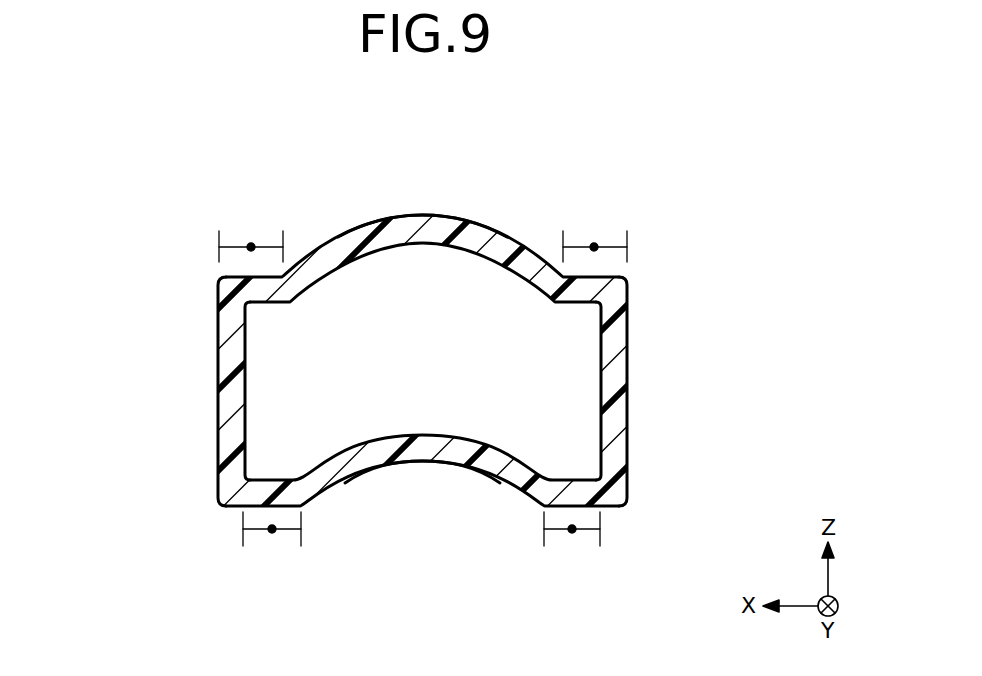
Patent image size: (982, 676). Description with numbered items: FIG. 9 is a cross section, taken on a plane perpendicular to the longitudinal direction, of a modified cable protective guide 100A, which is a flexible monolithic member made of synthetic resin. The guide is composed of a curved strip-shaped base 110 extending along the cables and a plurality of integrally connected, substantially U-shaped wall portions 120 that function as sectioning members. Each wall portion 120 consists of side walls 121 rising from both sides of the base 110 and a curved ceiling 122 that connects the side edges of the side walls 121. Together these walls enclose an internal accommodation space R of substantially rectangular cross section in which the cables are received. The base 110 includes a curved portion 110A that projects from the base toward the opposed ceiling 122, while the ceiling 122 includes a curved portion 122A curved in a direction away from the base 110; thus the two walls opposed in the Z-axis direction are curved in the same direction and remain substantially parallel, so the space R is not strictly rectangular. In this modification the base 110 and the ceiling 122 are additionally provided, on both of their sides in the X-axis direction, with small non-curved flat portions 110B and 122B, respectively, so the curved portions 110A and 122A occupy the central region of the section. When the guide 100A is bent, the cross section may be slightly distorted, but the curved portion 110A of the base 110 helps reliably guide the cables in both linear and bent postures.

The cable protective guide 100A is at (291, 128).
The curved strip-shaped base 110 is at (398, 465).
The curved portion 110A is at (502, 472).
The flat portion 110B is at (272, 533).
The U-shaped wall portion 120 is at (190, 325).
The side wall 121 is at (226, 436).
The curved ceiling 122 is at (482, 222).
The curved portion 122A is at (418, 228).
The flat portion 122B is at (251, 247).
The accommodation space R is at (487, 323).